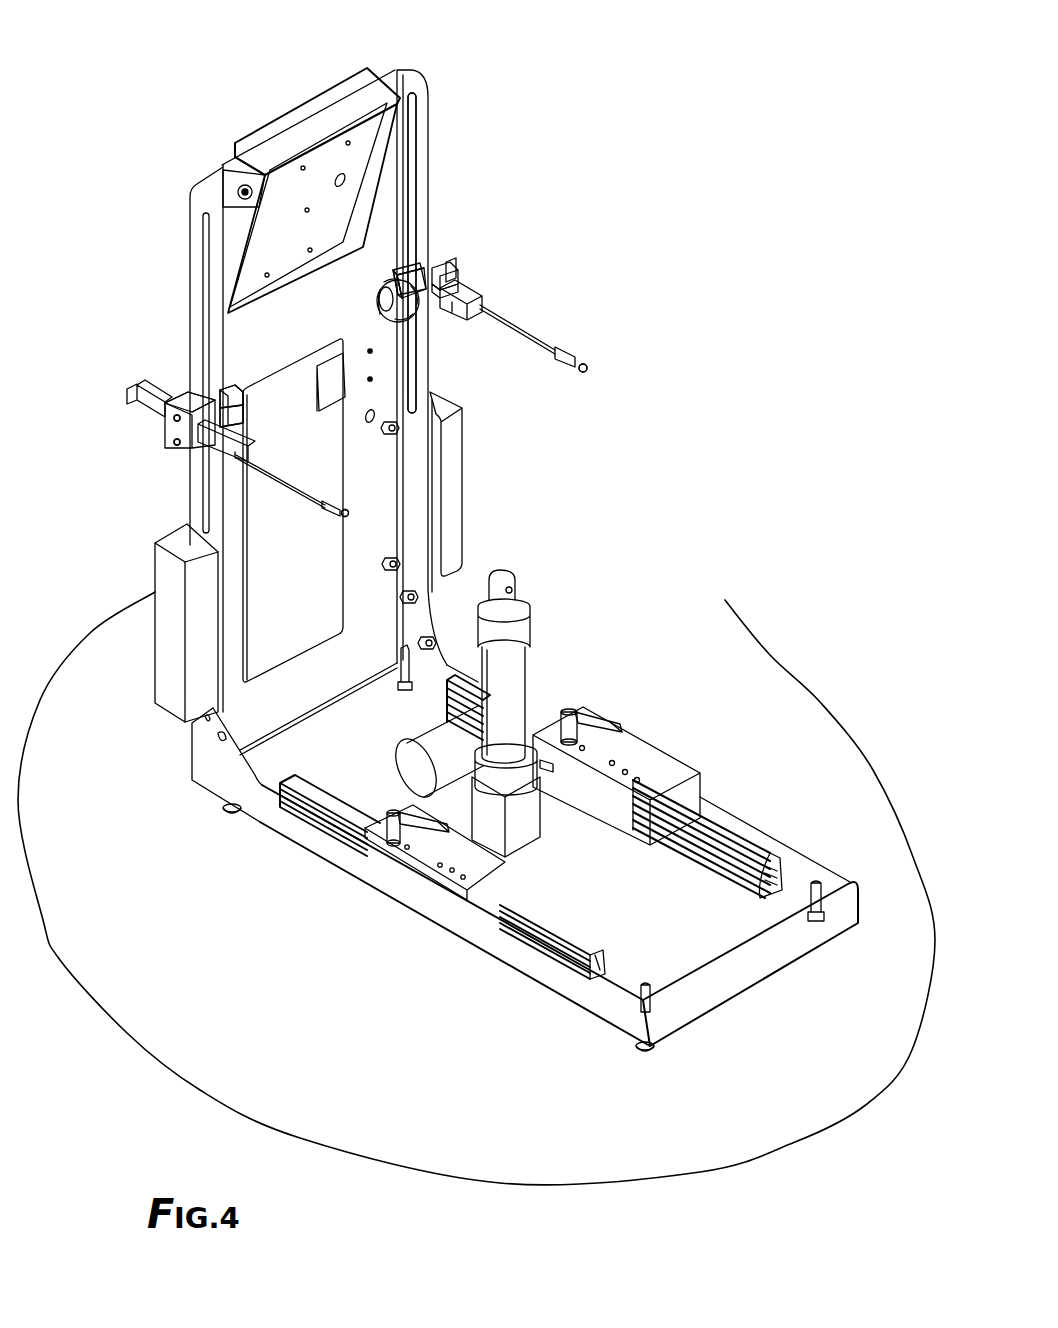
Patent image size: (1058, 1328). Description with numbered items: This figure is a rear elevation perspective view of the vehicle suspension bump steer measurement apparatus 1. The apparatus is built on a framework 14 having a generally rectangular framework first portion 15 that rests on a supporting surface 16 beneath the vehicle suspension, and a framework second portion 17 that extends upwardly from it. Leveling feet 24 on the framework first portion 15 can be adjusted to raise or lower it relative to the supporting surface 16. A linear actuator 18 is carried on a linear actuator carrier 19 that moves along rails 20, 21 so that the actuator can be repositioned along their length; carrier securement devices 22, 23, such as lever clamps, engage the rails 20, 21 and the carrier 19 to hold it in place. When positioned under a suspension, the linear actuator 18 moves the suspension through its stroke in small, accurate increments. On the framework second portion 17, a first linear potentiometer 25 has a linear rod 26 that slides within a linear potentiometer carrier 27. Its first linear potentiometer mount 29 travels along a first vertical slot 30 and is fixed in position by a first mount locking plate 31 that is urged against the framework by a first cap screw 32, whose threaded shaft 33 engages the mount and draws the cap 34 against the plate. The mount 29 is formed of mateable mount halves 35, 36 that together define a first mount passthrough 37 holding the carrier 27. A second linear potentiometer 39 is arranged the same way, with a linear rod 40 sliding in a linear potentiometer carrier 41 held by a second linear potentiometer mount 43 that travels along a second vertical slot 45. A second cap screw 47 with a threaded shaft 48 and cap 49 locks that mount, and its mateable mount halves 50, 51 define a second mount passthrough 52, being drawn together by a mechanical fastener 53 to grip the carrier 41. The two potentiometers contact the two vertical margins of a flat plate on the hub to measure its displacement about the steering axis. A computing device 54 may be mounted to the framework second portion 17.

The vehicle suspension bump steer measurement apparatus 1 is at (744, 73).
The framework 14 is at (240, 783).
The framework first portion 15 is at (370, 865).
The supporting surface 16 is at (810, 1097).
The framework second portion 17 is at (165, 572).
The linear actuator 18 is at (528, 625).
The linear actuator carrier 19 is at (592, 790).
The rail 20 is at (700, 812).
The rail 21 is at (540, 960).
The carrier securement device 22 is at (588, 722).
The carrier securement device 23 is at (399, 845).
The leveling feet 24 is at (232, 812).
The first linear potentiometer 25 is at (604, 377).
The linear rod 26 is at (556, 350).
The linear potentiometer carrier 27 is at (462, 298).
The first linear potentiometer mount 29 is at (437, 242).
The first vertical slot 30 is at (426, 110).
The first mount locking plate 31 is at (428, 322).
The first cap screw 32 is at (366, 305).
The threaded shaft 33 is at (422, 320).
The cap 34 is at (417, 327).
The mateable mount half 35 is at (442, 262).
The mateable mount half 36 is at (448, 274).
The first mount passthrough 37 is at (452, 288).
The second linear potentiometer 39 is at (330, 523).
The linear rod 40 is at (305, 498).
The linear potentiometer carrier 41 is at (145, 412).
The second linear potentiometer mount 43 is at (184, 386).
The second vertical slot 45 is at (190, 207).
The second cap screw 47 is at (246, 376).
The threaded shaft 48 is at (238, 414).
The cap 49 is at (238, 392).
The mateable mount half 50 is at (168, 392).
The mateable mount half 51 is at (172, 437).
The second mount passthrough 52 is at (203, 458).
The mechanical fastener 53 is at (186, 446).
The computing device 54 is at (335, 108).